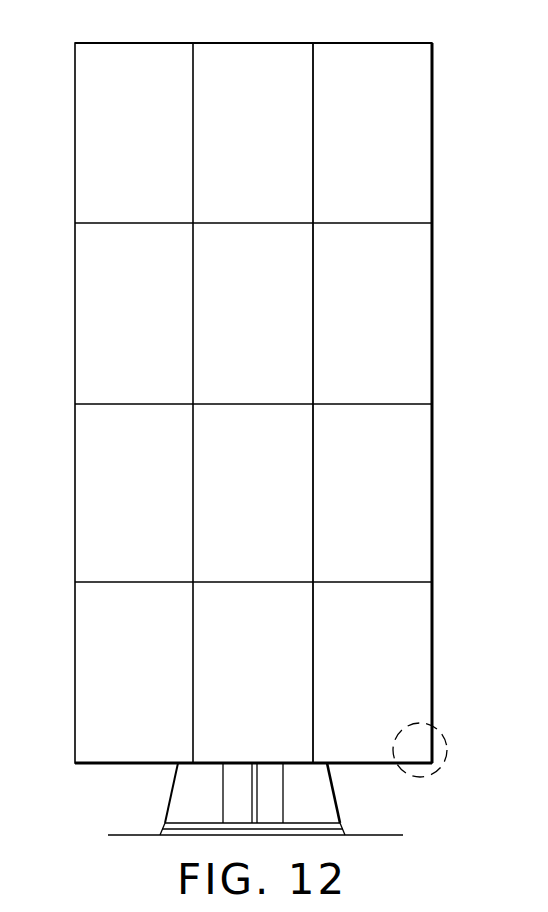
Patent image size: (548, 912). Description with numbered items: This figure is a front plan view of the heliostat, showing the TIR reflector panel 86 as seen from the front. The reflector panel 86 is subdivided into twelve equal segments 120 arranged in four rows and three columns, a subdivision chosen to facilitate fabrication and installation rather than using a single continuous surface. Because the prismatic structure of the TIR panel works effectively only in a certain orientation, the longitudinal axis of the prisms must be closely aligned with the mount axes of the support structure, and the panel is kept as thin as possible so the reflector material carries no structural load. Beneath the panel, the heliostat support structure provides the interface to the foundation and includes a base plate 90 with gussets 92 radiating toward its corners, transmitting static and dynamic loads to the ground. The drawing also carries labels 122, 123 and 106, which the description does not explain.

The reflector panel 86 is at (68, 377).
The segments 120 is at (433, 207).
The top edge member 122 is at (405, 43).
The corner joint detail 123 is at (428, 776).
The gussets 92 is at (174, 783).
The base plate 90 is at (345, 827).
The mounting element 106 is at (89, 907).